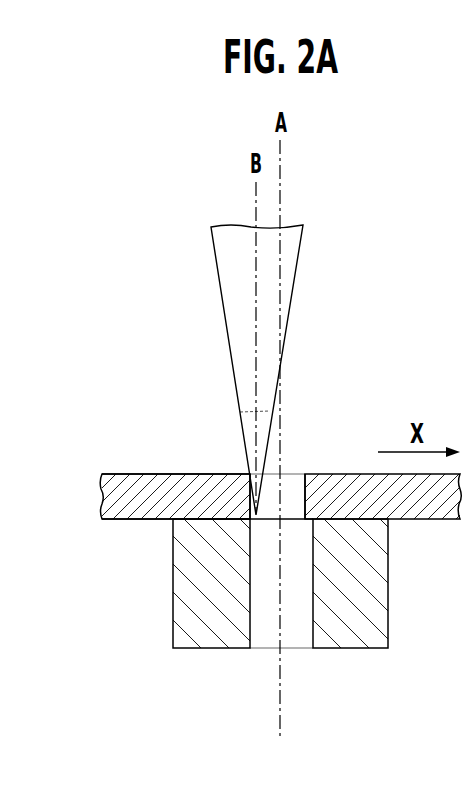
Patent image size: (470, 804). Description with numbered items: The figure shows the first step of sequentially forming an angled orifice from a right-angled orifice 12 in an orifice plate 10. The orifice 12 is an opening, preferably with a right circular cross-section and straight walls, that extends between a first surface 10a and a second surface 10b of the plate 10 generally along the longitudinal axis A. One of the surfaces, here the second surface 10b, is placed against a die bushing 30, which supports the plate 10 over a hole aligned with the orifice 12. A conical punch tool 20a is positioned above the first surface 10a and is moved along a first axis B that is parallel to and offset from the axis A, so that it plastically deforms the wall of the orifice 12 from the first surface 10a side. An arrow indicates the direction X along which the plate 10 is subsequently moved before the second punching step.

The punch tool 20a is at (238, 288).
The orifice plate 10 is at (155, 490).
The first surface 10a is at (195, 473).
The second surface 10b is at (140, 519).
The right-angled orifice 12 is at (288, 487).
The die bushing 30 is at (180, 615).